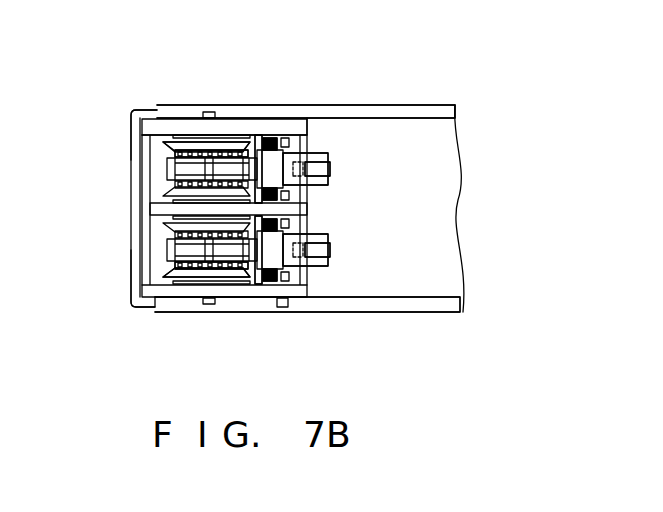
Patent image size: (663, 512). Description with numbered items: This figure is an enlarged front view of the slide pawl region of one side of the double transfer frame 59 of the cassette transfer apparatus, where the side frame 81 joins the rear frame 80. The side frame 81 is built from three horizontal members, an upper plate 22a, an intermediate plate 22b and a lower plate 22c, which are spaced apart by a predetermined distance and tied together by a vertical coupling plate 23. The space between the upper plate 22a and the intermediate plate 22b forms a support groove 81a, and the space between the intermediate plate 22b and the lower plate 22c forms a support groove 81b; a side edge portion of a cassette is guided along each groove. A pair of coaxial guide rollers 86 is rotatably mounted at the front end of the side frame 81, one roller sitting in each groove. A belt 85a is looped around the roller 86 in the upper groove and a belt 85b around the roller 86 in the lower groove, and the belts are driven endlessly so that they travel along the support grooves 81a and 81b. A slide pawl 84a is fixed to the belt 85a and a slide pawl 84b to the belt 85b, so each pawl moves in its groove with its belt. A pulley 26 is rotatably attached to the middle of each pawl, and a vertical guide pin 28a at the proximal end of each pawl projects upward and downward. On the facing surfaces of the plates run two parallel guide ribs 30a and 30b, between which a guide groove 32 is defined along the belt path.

The double transfer frame 59 is at (455, 80).
The rear frame 80 is at (432, 105).
The side frame 81 is at (112, 100).
The support groove 81a is at (132, 140).
The support groove 81b is at (135, 270).
The vertical coupling plate 23 is at (143, 163).
The upper plate 22a is at (257, 118).
The intermediate plate 22b is at (150, 210).
The lower plate 22c is at (172, 300).
The belt 85a is at (165, 180).
The belt 85b is at (165, 250).
The guide roller 86 is at (177, 135).
The guide rib 30b is at (242, 143).
The guide pin 28a is at (262, 140).
The guide groove 32 is at (285, 142).
The guide rib 30a is at (305, 150).
The pulley 26 is at (332, 172).
The slide pawl 84a is at (330, 157).
The slide pawl 84b is at (330, 265).